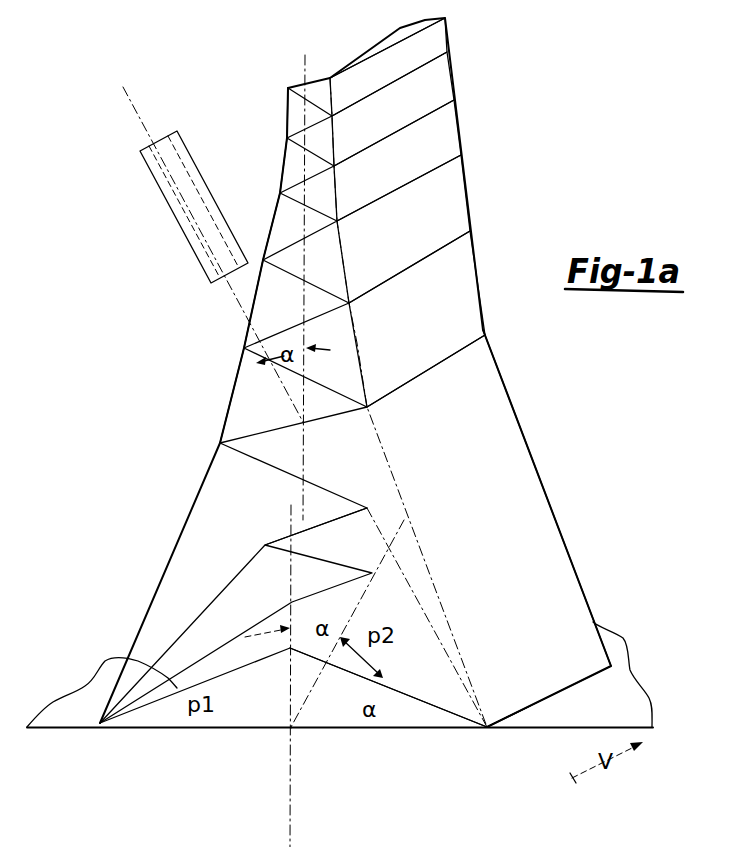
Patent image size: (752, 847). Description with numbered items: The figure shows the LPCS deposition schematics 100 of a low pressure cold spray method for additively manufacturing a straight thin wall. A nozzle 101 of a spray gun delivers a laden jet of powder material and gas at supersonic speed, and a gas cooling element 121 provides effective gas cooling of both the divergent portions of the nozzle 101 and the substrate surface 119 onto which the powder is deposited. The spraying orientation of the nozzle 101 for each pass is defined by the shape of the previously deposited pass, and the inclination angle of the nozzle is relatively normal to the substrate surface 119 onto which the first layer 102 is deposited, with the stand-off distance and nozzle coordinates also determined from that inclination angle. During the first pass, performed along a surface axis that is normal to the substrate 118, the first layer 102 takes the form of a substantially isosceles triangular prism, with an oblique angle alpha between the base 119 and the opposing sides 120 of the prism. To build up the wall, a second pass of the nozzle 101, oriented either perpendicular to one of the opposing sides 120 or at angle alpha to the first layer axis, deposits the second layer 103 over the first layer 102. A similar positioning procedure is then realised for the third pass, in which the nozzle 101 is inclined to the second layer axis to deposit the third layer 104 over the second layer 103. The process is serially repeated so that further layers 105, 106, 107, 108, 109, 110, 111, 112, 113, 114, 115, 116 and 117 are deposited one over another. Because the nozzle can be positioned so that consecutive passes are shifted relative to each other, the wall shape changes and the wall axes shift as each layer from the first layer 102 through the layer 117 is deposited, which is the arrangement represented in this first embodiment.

The LPCS deposition schematics 100 is at (547, 72).
The nozzle 101 is at (150, 158).
The first layer 102 is at (173, 717).
The second layer 103 is at (423, 678).
The third layer 104 is at (108, 660).
The layer 105 is at (367, 543).
The layer 106 is at (205, 512).
The layer 107 is at (367, 460).
The layer 108 is at (243, 410).
The layer 109 is at (357, 358).
The layer 110 is at (253, 303).
The layer 111 is at (335, 257).
The layer 112 is at (283, 220).
The layer 113 is at (330, 185).
The layer 114 is at (287, 150).
The layer 115 is at (328, 142).
The layer 116 is at (297, 103).
The layer 117 is at (325, 103).
The substrate 118 is at (371, 745).
The substrate surface 119 is at (415, 727).
The opposing sides 120 is at (226, 673).
The gas cooling element 121 is at (167, 223).